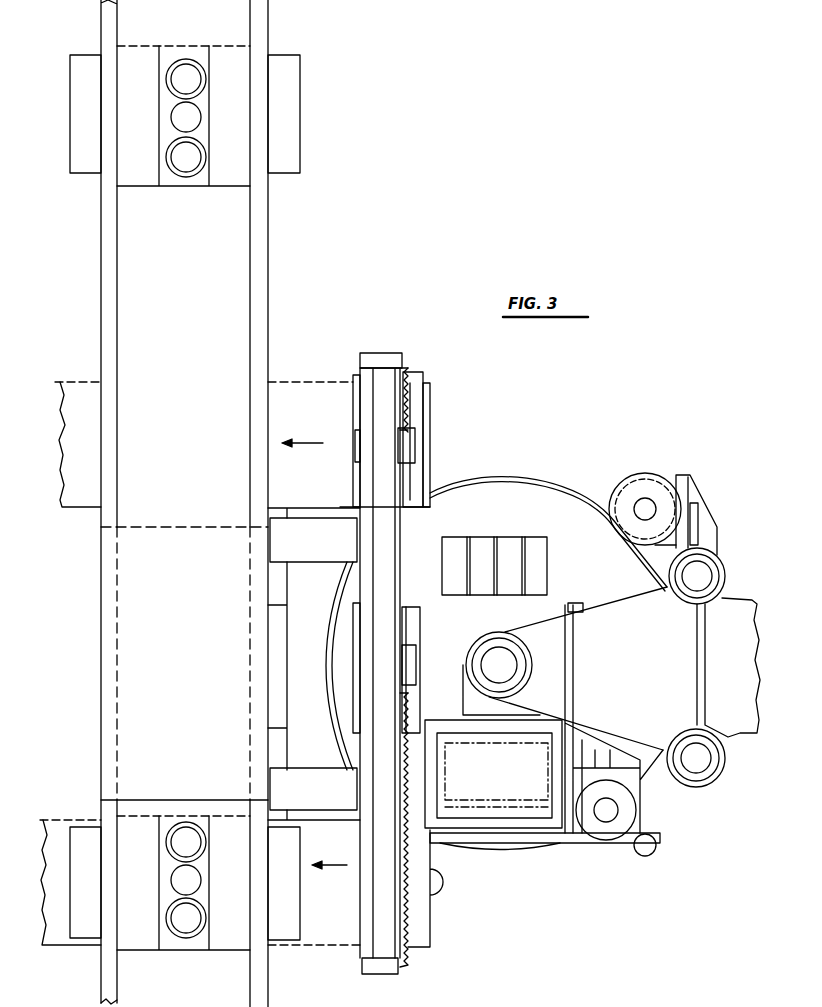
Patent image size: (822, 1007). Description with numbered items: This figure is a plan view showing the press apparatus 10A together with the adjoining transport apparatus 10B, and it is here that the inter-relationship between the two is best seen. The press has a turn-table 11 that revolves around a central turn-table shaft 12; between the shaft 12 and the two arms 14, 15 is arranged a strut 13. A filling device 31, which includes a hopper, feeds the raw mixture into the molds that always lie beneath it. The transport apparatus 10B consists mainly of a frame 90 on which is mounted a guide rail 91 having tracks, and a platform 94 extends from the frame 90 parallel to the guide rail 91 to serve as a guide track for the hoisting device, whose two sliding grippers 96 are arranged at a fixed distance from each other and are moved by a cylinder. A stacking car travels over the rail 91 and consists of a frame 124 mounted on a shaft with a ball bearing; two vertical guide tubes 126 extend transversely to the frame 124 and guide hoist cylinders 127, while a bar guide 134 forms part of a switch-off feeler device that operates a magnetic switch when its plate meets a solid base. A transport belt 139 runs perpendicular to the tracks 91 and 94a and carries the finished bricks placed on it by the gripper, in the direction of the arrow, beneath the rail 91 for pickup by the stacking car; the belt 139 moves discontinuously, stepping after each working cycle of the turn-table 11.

The press apparatus 10A is at (745, 622).
The transport apparatus 10B is at (106, 236).
The turn-table 11 is at (570, 507).
The turn-table shaft 12 is at (505, 655).
The strut 13 is at (668, 664).
The arm 14 is at (705, 575).
The arm 15 is at (703, 762).
The filling device 31 is at (530, 795).
The frame 90 is at (125, 625).
The guide rail 91 is at (242, 257).
The platform 94 is at (330, 560).
The track 94a is at (385, 955).
The sliding gripper 96 is at (416, 415).
The frame of stacking car 124 is at (293, 162).
The guide tube 126 is at (192, 117).
The hoist cylinder 127 is at (186, 72).
The bar guide 134 is at (487, 548).
The transport belt 139 is at (85, 395).